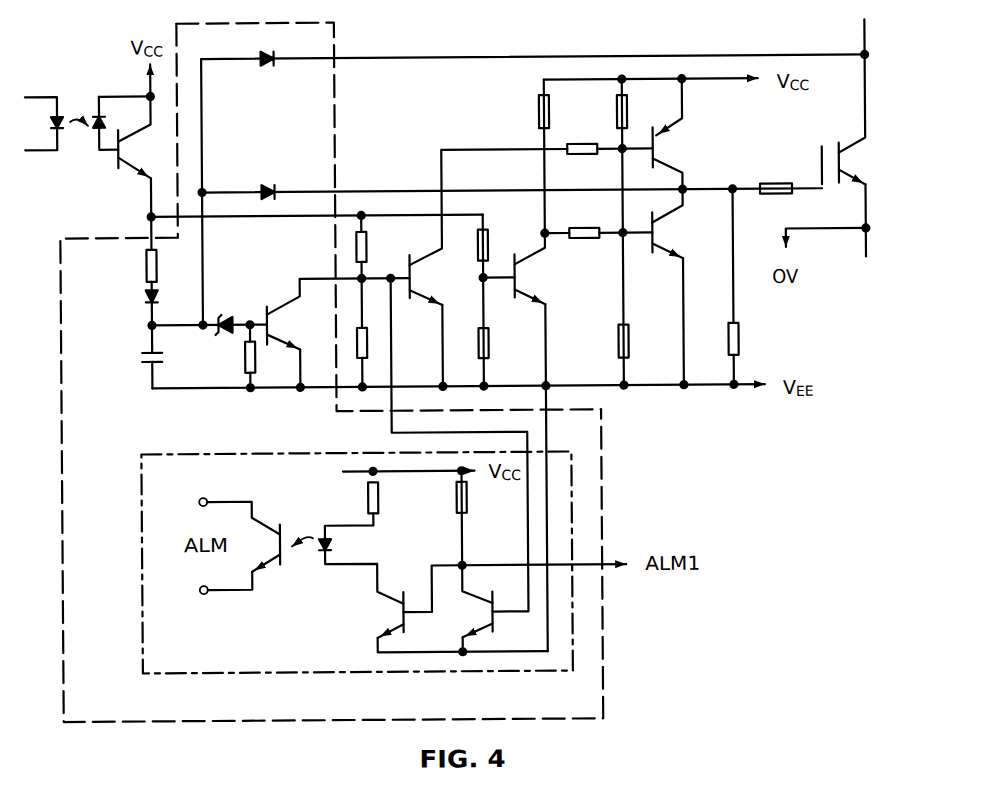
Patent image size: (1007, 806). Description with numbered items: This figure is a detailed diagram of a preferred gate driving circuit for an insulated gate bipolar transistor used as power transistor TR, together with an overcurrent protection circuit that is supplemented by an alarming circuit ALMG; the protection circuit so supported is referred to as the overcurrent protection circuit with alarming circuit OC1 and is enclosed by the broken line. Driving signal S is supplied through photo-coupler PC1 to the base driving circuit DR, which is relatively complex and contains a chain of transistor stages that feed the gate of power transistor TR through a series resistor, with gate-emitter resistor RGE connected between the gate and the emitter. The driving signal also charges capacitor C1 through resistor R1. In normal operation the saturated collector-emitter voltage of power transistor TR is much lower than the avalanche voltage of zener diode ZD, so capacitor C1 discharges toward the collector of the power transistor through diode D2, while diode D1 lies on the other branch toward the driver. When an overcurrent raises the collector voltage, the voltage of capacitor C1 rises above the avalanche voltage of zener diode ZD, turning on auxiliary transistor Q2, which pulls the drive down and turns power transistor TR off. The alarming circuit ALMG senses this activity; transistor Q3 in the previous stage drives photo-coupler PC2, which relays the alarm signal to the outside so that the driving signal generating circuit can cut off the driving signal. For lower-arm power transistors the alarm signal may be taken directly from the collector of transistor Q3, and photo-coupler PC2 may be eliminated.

The base driving circuit DR is at (487, 42).
The overcurrent protection circuit with alarming circuit OC1 is at (331, 479).
The alarming circuit ALMG is at (258, 485).
The driving signal S is at (56, 123).
The photo-coupler PC1 is at (105, 144).
The resistor R1 is at (138, 288).
The capacitor C1 is at (139, 356).
The diode D1 is at (512, 178).
The diode D2 is at (533, 45).
The zener diode ZD is at (209, 314).
The auxiliary transistor Q2 is at (339, 332).
The gate-emitter resistor RGE is at (754, 287).
The power transistor TR is at (814, 138).
The photo-coupler PC2 is at (301, 550).
The transistor Q3 is at (502, 608).